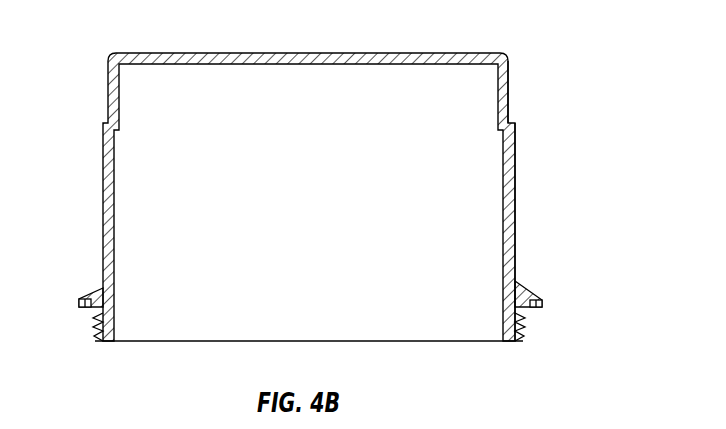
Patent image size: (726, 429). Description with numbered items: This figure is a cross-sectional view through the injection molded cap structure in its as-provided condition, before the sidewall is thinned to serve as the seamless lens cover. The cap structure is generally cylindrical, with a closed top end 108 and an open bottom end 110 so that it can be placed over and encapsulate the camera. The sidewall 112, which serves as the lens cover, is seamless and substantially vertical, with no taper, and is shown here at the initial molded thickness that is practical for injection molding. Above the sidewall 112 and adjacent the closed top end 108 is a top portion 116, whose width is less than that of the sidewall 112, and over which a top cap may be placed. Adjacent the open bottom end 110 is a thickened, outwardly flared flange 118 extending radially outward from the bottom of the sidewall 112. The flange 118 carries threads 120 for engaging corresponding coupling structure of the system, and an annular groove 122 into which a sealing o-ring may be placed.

The top end 108 is at (453, 52).
The open bottom end 110 is at (485, 345).
The sidewall 112 is at (516, 179).
The top portion 116 is at (509, 97).
The flange 118 is at (97, 288).
The threads 120 is at (97, 330).
The annular groove 122 is at (88, 306).